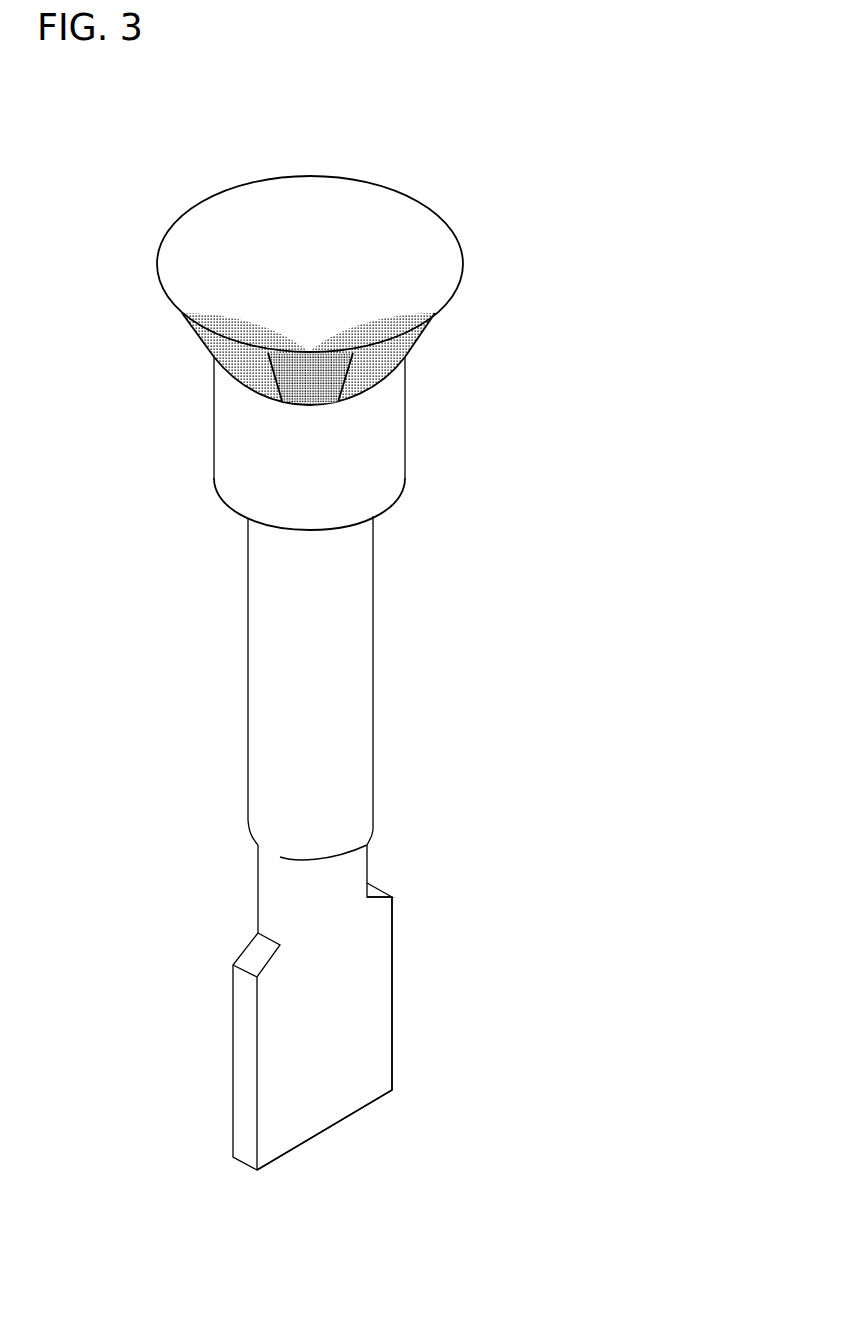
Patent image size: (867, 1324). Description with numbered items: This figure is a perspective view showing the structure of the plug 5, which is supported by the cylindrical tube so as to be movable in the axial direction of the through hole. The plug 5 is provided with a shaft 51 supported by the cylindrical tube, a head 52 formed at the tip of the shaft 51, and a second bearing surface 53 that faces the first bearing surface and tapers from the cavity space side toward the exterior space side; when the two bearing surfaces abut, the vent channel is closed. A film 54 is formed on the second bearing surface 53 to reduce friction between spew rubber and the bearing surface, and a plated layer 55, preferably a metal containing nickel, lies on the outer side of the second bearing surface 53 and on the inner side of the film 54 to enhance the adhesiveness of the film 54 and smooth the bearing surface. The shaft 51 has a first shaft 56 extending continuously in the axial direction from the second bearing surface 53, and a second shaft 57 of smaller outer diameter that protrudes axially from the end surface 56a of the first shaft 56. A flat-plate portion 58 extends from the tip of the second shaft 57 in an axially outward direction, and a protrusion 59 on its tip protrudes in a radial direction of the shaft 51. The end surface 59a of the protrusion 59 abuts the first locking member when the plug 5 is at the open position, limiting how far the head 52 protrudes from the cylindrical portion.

The plug 5 is at (407, 427).
The shaft 51 is at (100, 522).
The head 52 is at (358, 223).
The second bearing surface 53 is at (210, 358).
The film 54 is at (410, 355).
The plated layer 55 is at (301, 370).
The first shaft 56 is at (243, 465).
The end surface of first shaft 56a is at (392, 505).
The second shaft 57 is at (282, 680).
The flat-plate portion 58 is at (307, 1030).
The protrusion 59 is at (382, 967).
The end surface of protrusion 59a is at (375, 887).